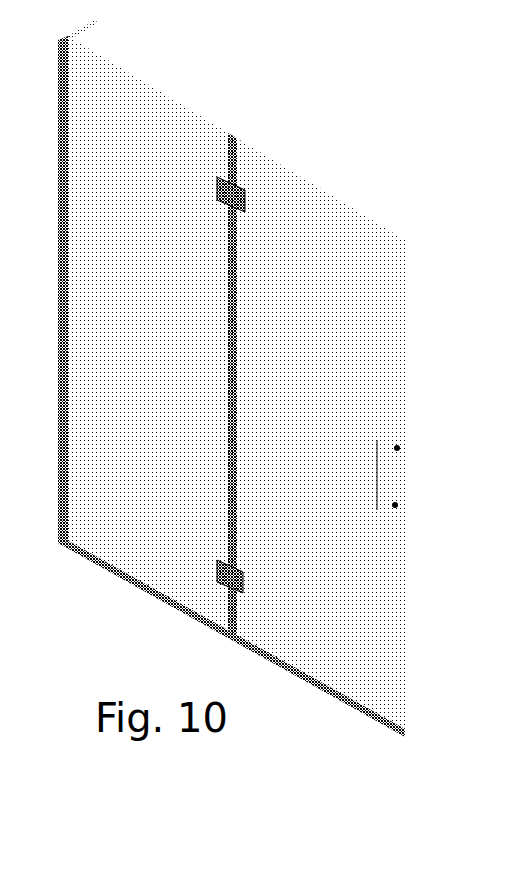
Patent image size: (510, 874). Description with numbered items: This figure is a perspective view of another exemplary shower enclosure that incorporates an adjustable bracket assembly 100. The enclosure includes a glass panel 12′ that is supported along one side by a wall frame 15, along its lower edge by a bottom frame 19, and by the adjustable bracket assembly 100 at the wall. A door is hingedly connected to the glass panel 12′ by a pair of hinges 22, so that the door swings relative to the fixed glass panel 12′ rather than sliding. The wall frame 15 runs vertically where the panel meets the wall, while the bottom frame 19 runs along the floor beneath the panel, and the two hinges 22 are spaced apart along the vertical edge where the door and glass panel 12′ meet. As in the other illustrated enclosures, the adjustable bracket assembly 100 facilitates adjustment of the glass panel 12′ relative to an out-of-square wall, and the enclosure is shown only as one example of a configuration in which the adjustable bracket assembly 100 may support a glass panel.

The adjustable bracket assembly 100 is at (235, 378).
The glass panel 12′ is at (177, 128).
The wall frame 15 is at (58, 318).
The bottom frame 19 is at (140, 575).
The hinges 22 is at (240, 195).